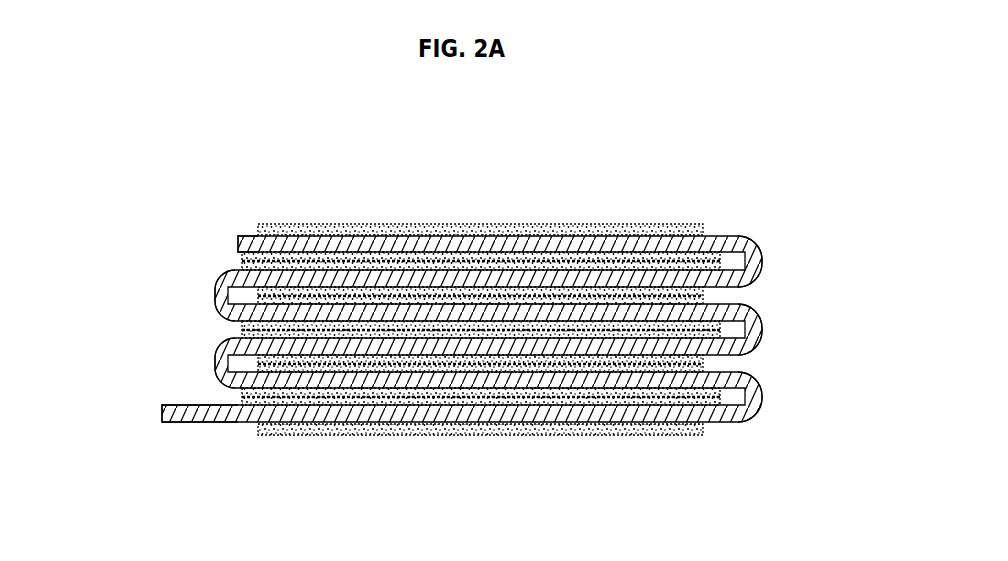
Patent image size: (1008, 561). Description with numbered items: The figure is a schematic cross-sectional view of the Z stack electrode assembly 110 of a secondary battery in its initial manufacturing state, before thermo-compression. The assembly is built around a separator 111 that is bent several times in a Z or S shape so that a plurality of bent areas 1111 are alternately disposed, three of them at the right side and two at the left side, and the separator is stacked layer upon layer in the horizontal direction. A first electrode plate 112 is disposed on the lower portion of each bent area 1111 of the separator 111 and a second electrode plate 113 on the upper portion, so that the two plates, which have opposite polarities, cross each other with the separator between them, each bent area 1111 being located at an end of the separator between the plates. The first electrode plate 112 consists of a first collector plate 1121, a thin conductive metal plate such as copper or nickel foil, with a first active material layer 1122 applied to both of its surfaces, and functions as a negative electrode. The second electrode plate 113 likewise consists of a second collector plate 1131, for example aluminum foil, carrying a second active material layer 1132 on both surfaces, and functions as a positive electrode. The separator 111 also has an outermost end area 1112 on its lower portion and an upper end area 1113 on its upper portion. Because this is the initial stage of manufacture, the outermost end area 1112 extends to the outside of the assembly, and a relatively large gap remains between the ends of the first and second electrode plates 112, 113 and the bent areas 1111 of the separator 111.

The Z stack electrode assembly 110 is at (157, 154).
The separator 111 is at (768, 235).
The bent area 1111 is at (213, 297).
The outermost end area 1112 is at (160, 414).
The upper end area 1113 is at (236, 240).
The first electrode plate 112 is at (332, 239).
The first collector plate 1121 is at (385, 365).
The first active material layer 1122 is at (477, 357).
The second electrode plate 113 is at (590, 271).
The second collector plate 1131 is at (657, 303).
The second active material layer 1132 is at (710, 395).